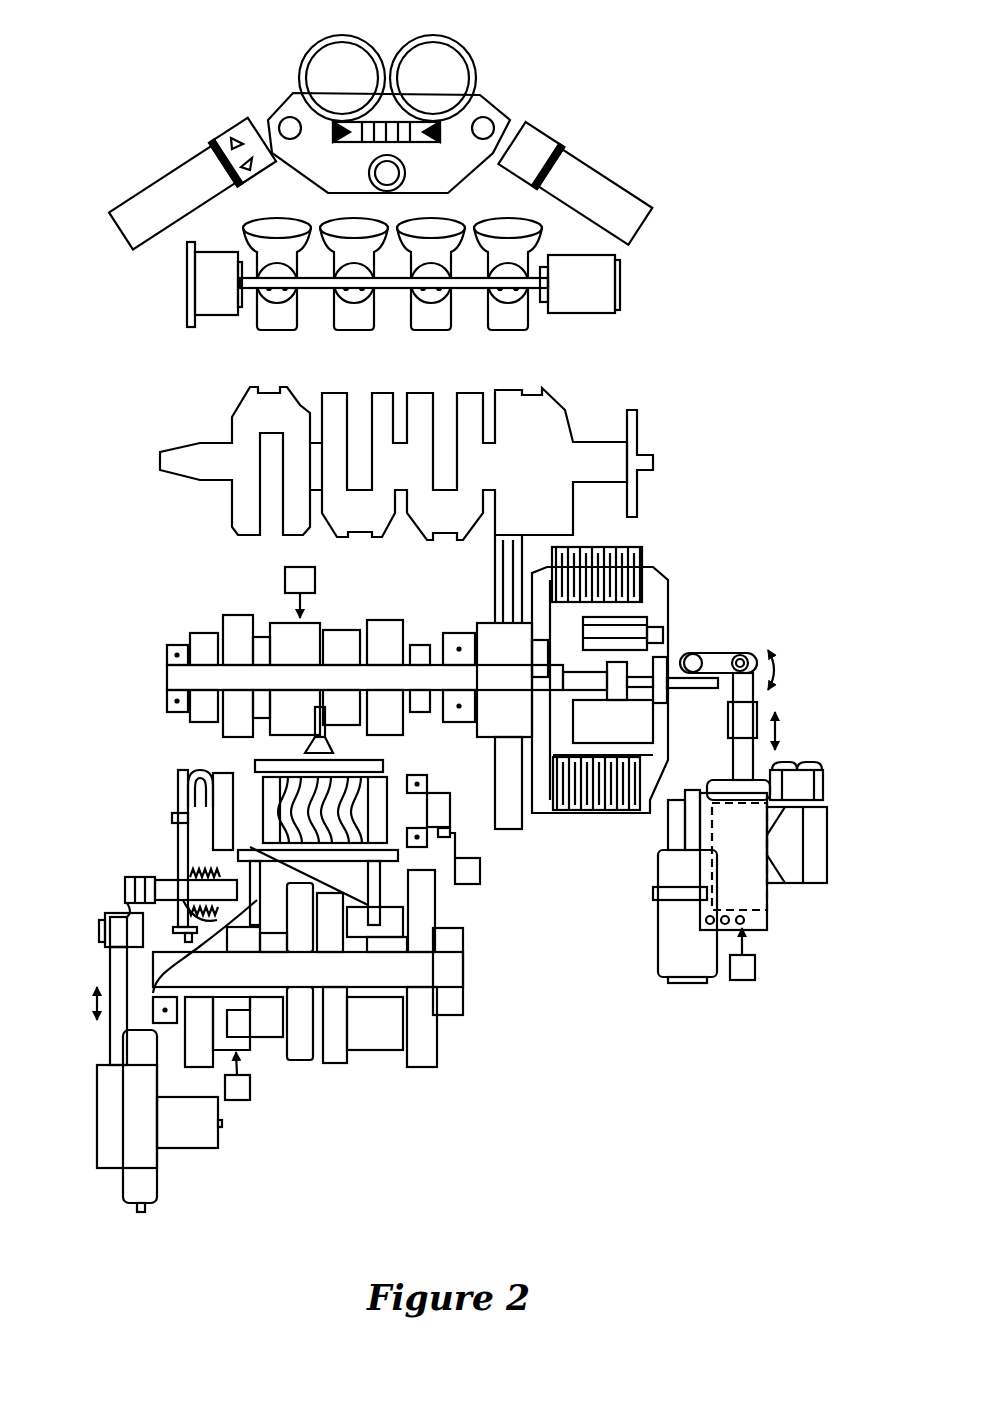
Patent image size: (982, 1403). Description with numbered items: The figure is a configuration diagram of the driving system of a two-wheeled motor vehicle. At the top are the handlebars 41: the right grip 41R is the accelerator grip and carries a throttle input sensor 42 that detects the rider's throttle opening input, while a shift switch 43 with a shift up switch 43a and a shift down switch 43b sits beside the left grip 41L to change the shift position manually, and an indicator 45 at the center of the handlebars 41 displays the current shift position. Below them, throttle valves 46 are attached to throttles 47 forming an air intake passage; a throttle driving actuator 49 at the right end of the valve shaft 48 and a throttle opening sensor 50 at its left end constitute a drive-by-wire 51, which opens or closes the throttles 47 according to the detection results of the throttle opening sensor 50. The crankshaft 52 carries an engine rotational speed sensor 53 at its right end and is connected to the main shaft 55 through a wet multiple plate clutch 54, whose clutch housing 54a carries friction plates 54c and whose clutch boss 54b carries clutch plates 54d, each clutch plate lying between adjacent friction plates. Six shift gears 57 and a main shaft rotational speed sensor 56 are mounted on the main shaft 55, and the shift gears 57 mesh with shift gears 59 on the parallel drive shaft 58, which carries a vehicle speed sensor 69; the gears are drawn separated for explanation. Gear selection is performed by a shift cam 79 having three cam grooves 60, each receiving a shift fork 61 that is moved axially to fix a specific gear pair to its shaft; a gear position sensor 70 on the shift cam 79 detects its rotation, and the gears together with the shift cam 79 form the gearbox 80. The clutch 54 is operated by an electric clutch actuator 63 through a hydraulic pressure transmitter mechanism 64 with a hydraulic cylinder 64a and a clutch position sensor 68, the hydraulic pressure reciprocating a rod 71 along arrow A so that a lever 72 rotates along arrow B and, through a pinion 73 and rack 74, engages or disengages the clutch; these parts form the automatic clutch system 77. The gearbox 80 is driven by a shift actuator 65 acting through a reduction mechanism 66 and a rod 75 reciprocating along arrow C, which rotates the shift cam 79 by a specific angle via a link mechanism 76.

The handlebars 41 is at (503, 100).
The left grip 41L is at (150, 185).
The right grip 41R is at (615, 187).
The throttle input sensor 42 is at (557, 145).
The shift switch 43 is at (243, 127).
The shift up switch 43a is at (227, 142).
The shift down switch 43b is at (247, 170).
The indicator 45 is at (388, 132).
The throttle valves 46 is at (434, 268).
The throttles 47 is at (412, 219).
The valve shaft 48 is at (473, 292).
The throttle driving actuator 49 is at (605, 298).
The throttle opening sensor 50 is at (222, 308).
The drive-by-wire 51 is at (630, 273).
The crankshaft 52 is at (485, 395).
The engine rotational speed sensor 53 is at (640, 422).
The wet multiple plate clutch 54 is at (630, 653).
The clutch housing 54a is at (585, 556).
The clutch boss 54b is at (537, 600).
The friction plates 54c is at (635, 548).
The clutch plates 54d is at (612, 598).
The main shaft 55 is at (170, 667).
The main shaft rotational speed sensor 56 is at (315, 578).
The shift gears 57 is at (362, 639).
The drive shaft 58 is at (462, 980).
The shift gears 59 is at (338, 968).
The cam grooves 60 is at (365, 797).
The shift fork 61 is at (335, 745).
The clutch actuator 63 is at (662, 945).
The hydraulic pressure transmitter mechanism 64 is at (778, 892).
The hydraulic cylinder 64a is at (712, 925).
The shift actuator 65 is at (188, 1150).
The reduction mechanism 66 is at (105, 1114).
The clutch position sensor 68 is at (740, 980).
The vehicle speed sensor 69 is at (250, 1088).
The gear position sensor 70 is at (480, 872).
The rod 71 is at (745, 760).
The lever 72 is at (742, 656).
The pinion 73 is at (697, 655).
The rack 74 is at (703, 688).
The rod 75 is at (112, 964).
The link mechanism 76 is at (144, 1003).
The automatic clutch system 77 is at (726, 777).
The shift cam 79 is at (263, 803).
The gearbox 80 is at (282, 829).